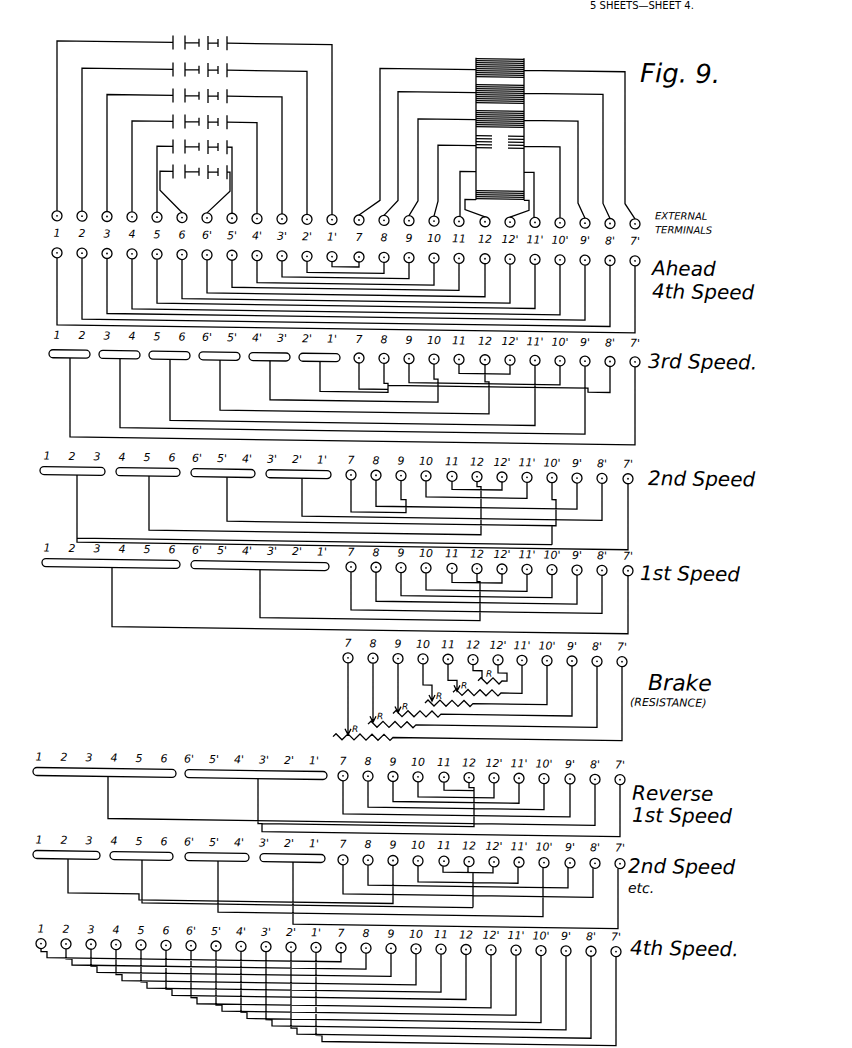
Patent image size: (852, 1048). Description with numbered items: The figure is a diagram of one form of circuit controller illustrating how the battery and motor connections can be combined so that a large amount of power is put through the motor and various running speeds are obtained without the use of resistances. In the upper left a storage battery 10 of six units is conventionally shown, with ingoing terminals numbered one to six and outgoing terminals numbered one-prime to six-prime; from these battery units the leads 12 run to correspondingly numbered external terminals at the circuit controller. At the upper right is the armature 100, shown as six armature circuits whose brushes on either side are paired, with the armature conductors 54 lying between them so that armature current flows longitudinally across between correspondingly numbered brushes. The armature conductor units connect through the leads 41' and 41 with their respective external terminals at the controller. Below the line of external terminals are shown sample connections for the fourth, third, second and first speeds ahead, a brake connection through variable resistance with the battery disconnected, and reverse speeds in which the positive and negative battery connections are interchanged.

The battery 10 is at (186, 107).
The armature 100 is at (518, 109).
The leads 12 is at (288, 156).
The armature lead 41 is at (438, 121).
The leads 41' is at (594, 181).
The armature conductors 54 is at (497, 68).